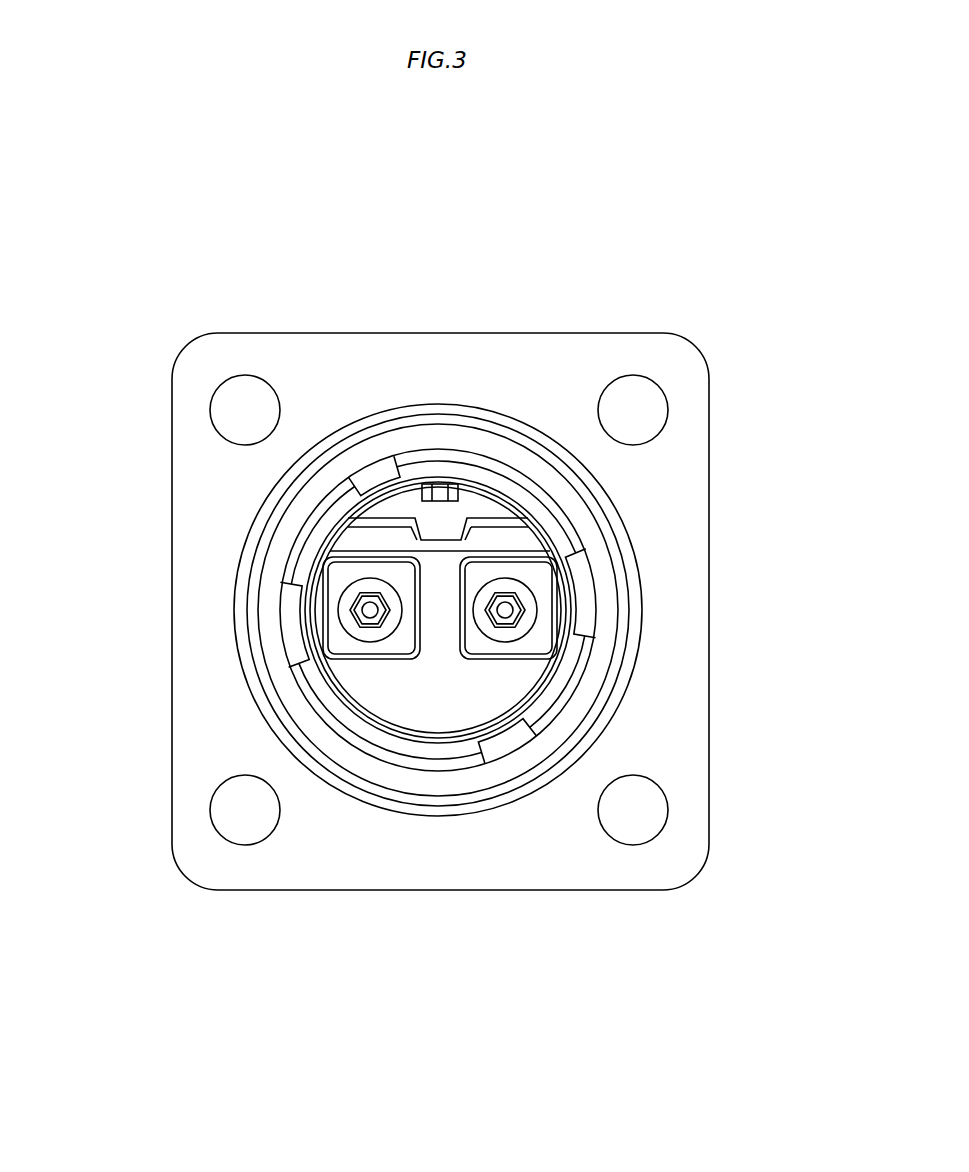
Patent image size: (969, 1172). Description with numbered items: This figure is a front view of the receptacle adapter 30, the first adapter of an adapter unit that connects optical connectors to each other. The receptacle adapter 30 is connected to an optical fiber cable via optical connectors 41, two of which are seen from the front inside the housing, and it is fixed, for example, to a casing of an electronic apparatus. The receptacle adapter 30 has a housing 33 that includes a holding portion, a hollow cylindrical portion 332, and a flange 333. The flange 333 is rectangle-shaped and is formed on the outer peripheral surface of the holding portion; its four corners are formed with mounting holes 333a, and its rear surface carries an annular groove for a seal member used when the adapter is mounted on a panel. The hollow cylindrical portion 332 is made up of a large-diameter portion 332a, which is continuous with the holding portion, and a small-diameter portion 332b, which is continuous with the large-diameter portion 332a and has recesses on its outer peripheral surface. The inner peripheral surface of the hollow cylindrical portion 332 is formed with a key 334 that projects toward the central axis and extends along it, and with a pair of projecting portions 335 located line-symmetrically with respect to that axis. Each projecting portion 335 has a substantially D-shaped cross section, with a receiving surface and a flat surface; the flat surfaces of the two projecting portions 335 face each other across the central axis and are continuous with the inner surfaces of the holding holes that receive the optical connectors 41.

The receptacle adapter 30 is at (503, 323).
The housing 33 is at (166, 537).
The flange 333 is at (186, 676).
The mounting holes 333a is at (238, 378).
The hollow cylindrical portion 332 is at (812, 462).
The large-diameter portion 332a is at (620, 510).
The small-diameter portion 332b is at (586, 534).
The key 334 is at (443, 495).
The projecting portions 335 is at (318, 613).
The optical connectors 41 is at (378, 668).